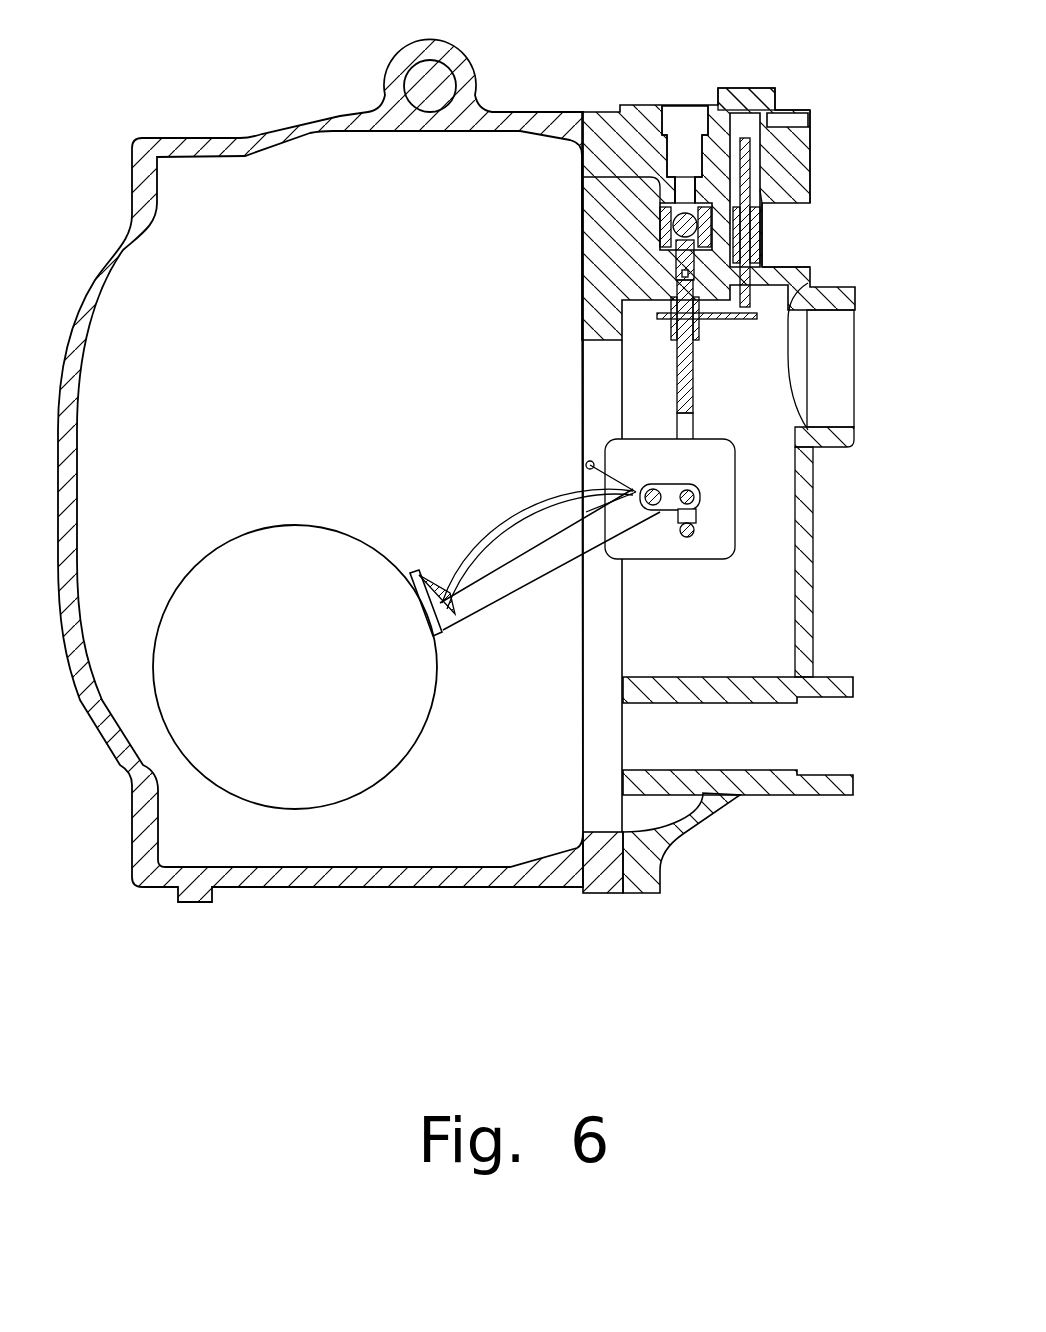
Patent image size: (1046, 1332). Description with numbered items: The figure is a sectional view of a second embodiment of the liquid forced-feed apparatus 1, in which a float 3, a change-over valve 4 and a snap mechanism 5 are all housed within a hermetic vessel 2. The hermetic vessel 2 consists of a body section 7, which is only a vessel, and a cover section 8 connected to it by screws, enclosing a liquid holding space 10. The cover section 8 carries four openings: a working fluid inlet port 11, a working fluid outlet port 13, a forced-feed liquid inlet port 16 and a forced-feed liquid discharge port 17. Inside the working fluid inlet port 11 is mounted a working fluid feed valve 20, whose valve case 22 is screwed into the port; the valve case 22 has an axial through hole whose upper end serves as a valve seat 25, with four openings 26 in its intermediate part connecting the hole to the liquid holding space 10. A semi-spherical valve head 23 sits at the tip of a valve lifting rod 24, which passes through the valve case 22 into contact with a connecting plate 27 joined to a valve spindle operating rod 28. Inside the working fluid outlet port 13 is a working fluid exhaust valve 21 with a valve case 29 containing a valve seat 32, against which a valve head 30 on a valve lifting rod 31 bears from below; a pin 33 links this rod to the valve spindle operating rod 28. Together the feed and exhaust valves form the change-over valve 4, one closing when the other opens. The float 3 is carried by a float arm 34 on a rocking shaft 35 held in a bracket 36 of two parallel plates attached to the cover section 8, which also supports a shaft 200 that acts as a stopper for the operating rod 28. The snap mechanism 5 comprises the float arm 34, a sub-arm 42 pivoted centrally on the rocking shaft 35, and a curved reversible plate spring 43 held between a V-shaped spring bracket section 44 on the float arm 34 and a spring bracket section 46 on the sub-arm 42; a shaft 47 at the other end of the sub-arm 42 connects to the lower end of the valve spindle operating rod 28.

The liquid forced-feed apparatus 1 is at (528, 82).
The hermetic vessel 2 is at (314, 81).
The float 3 is at (208, 552).
The change-over valve 4 is at (800, 305).
The snap mechanism 5 is at (772, 478).
The body section 7 is at (199, 144).
The cover section 8 is at (797, 112).
The liquid holding space 10 is at (287, 258).
The working fluid inlet port 11 is at (800, 138).
The working fluid outlet port 13 is at (683, 118).
The forced-feed liquid inlet port 16 is at (845, 396).
The forced-feed liquid discharge port 17 is at (840, 737).
The working fluid feed valve 20 is at (775, 240).
The working fluid exhaust valve 21 is at (630, 234).
The valve case 22 is at (760, 196).
The valve head 23 is at (742, 122).
The valve lifting rod 24 is at (765, 260).
The valve seat 25 is at (752, 141).
The openings 26 is at (762, 212).
The connecting plate 27 is at (660, 318).
The valve spindle operating rod 28 is at (693, 388).
The valve case 29 is at (665, 250).
The valve head 30 is at (672, 222).
The valve lifting rod 31 is at (682, 273).
The valve seat 32 is at (660, 207).
The pin 33 is at (671, 300).
The float arm 34 is at (530, 578).
The rocking shaft 35 is at (656, 508).
The bracket 36 is at (712, 548).
The sub-arm 42 is at (640, 486).
The reversible plate spring 43 is at (519, 518).
The spring bracket section 44 is at (440, 580).
The spring bracket section 46 is at (588, 460).
The shaft 47 is at (695, 499).
The shaft 200 is at (690, 537).